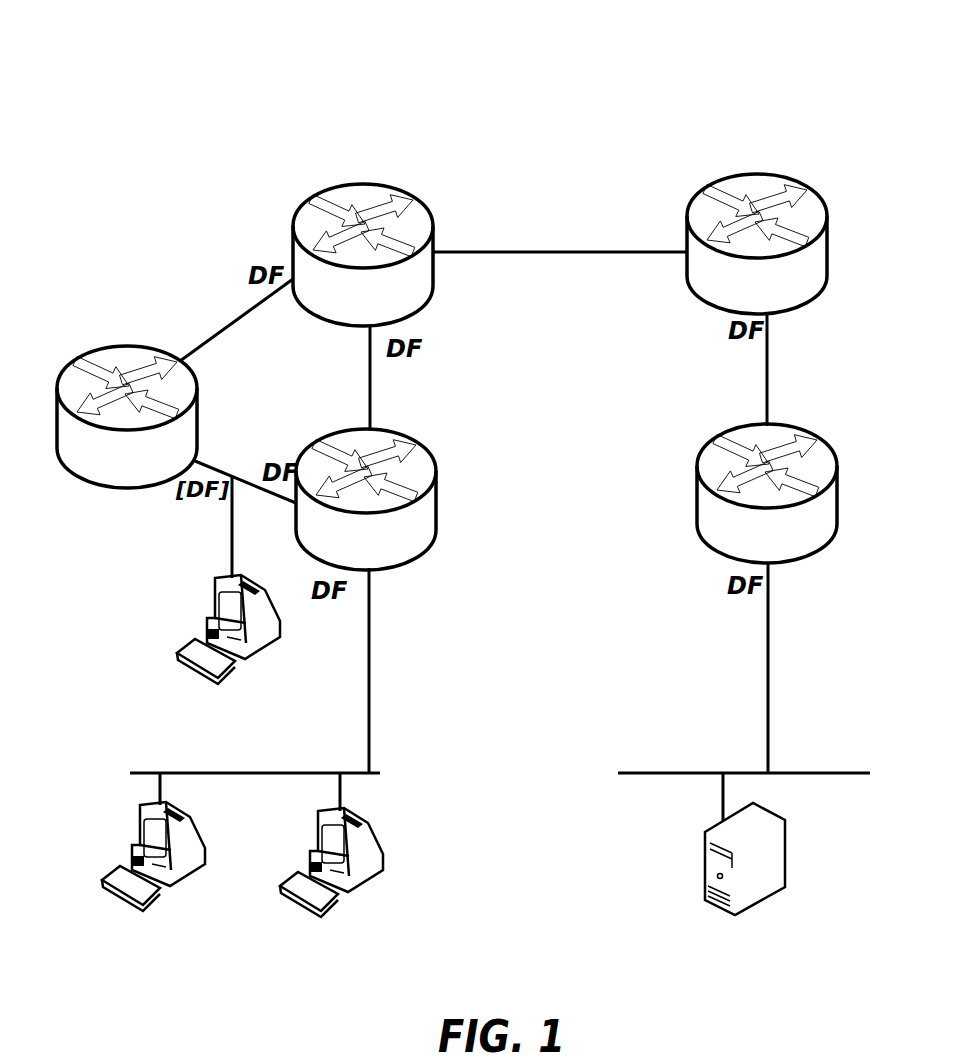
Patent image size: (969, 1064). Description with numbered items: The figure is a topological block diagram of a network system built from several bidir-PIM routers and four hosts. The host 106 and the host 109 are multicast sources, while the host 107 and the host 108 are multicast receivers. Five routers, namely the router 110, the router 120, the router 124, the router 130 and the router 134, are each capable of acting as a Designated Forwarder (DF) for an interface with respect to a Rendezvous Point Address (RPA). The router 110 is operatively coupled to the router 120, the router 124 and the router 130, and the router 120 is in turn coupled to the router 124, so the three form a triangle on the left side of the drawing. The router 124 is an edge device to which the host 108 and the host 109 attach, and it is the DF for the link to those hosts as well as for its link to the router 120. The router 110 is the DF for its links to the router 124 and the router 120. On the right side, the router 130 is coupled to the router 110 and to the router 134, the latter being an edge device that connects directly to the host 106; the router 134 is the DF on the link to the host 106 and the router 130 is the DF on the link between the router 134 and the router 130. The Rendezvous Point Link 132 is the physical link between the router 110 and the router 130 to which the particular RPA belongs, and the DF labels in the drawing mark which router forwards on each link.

The router 110 is at (342, 308).
The router 120 is at (106, 470).
The router 124 is at (345, 549).
The router 130 is at (736, 296).
The router 134 is at (746, 544).
The Rendezvous Point Link (RPL) 132 is at (643, 216).
The host 106 is at (737, 883).
The host 107 is at (240, 639).
The host 108 is at (165, 868).
The host 109 is at (331, 886).